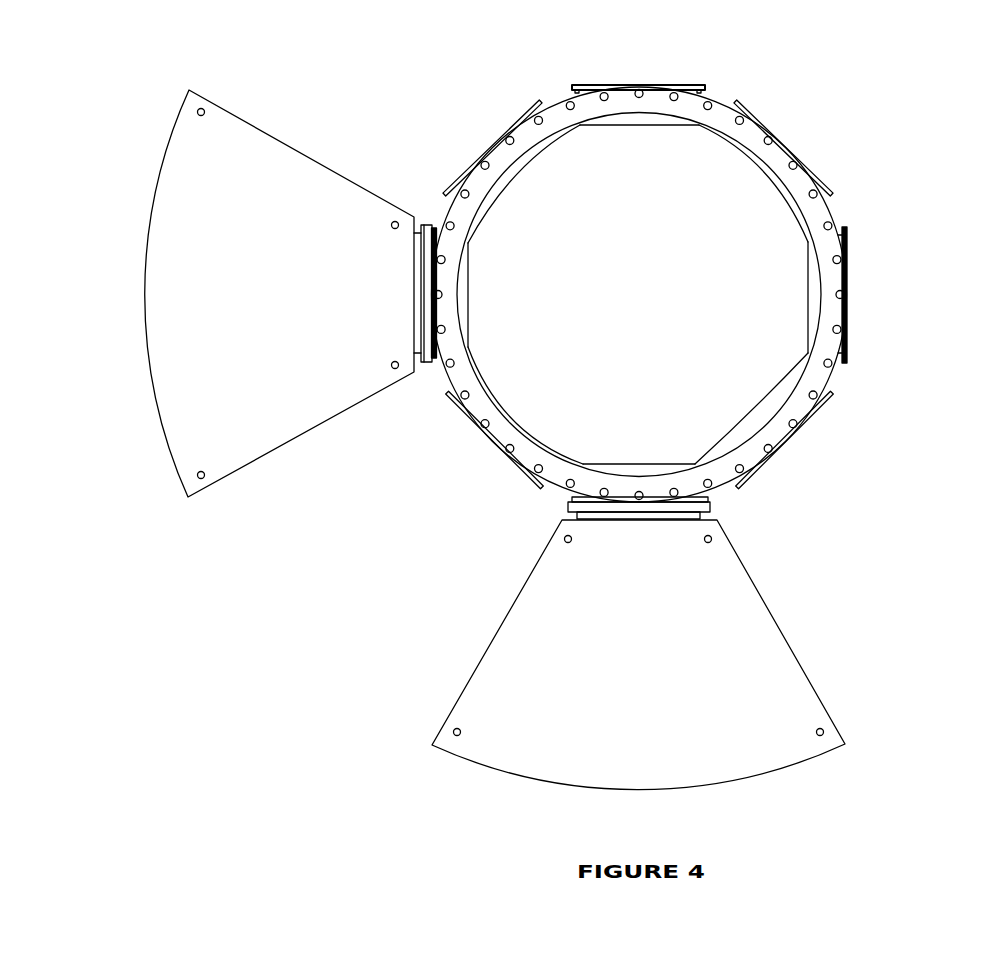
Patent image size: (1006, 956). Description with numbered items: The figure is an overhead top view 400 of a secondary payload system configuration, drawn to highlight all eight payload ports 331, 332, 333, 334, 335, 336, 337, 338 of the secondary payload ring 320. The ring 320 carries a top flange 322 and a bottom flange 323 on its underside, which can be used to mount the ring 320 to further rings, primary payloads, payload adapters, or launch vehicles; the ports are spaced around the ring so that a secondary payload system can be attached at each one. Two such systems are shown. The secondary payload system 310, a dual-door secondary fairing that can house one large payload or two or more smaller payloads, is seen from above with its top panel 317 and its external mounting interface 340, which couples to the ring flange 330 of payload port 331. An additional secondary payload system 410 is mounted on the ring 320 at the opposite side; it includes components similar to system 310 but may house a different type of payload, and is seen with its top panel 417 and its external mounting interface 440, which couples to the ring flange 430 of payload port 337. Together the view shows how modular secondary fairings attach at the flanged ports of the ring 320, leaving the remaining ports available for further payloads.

The top view 400 is at (345, 32).
The secondary payload system 310 is at (480, 618).
The top panel 317 is at (775, 748).
The secondary payload ring 320 is at (514, 100).
The top flange 322 is at (498, 160).
The bottom flange 323 is at (844, 383).
The ring flange 330 is at (722, 497).
The payload port 331 is at (639, 440).
The payload port 332 is at (753, 398).
The payload port 333 is at (792, 299).
The payload port 334 is at (762, 205).
The payload port 335 is at (634, 136).
The payload port 336 is at (518, 205).
The payload port 337 is at (490, 300).
The payload port 338 is at (530, 398).
The external mounting interface 340 is at (722, 511).
The secondary payload system 410 is at (287, 472).
The top panel 417 is at (220, 447).
The ring flange 430 is at (437, 370).
The external mounting interface 440 is at (420, 374).